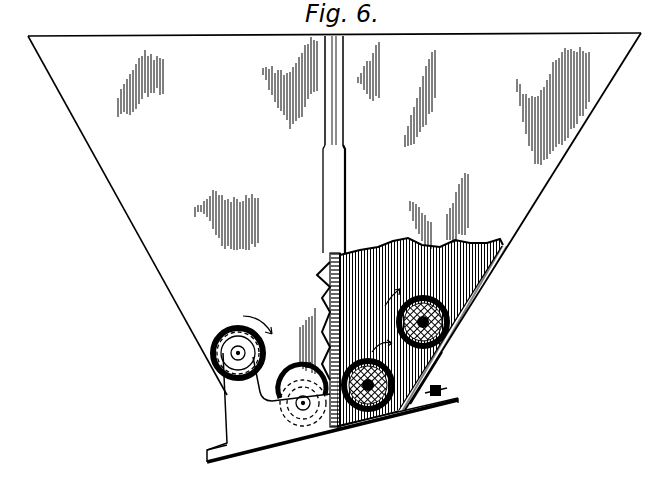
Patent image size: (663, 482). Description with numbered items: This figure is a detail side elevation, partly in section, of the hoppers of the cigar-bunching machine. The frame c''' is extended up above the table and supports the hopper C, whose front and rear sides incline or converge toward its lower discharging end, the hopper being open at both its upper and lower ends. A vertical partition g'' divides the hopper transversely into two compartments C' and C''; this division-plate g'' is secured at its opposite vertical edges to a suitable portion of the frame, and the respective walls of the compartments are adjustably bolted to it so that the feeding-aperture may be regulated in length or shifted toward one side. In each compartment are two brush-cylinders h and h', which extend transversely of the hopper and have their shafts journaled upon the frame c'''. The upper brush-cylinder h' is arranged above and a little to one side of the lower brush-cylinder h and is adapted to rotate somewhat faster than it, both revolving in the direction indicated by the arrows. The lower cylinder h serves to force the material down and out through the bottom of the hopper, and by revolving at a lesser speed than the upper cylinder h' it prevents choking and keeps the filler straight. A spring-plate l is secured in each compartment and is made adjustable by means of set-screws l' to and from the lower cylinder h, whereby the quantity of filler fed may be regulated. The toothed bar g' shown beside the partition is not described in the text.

The hopper C is at (334, 221).
The hopper compartment C' is at (226, 237).
The hopper compartment C'' is at (420, 332).
The frame c''' is at (332, 407).
The vertical partition g'' is at (353, 144).
The toothed bar g' is at (345, 340).
The upper brush-cylinder h' is at (356, 338).
The lower brush-cylinder h is at (335, 397).
The spring-plate l is at (445, 378).
The set-screw l' is at (463, 391).